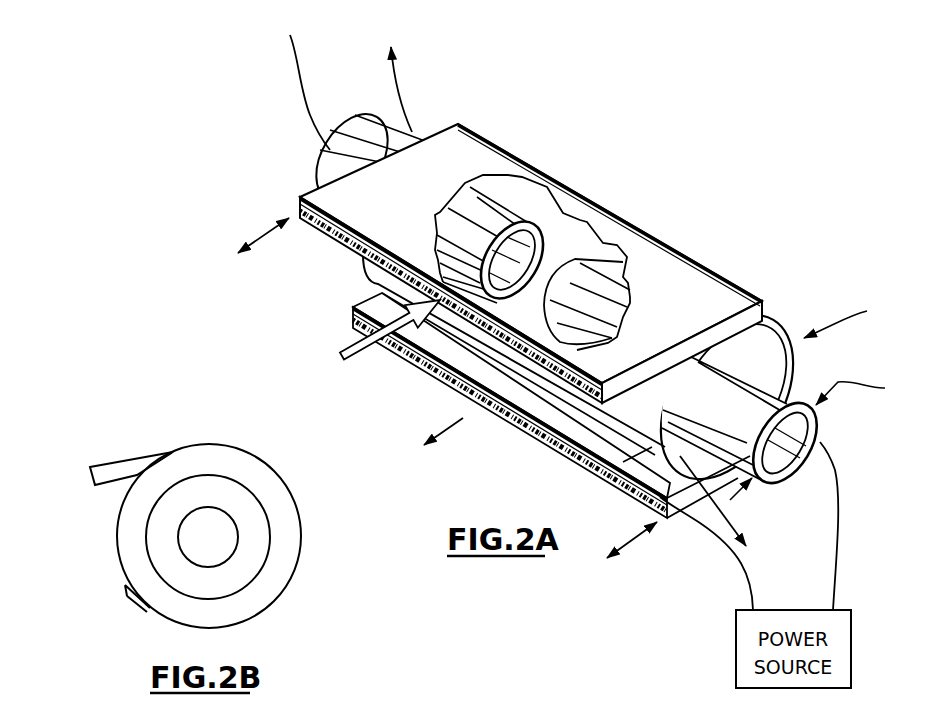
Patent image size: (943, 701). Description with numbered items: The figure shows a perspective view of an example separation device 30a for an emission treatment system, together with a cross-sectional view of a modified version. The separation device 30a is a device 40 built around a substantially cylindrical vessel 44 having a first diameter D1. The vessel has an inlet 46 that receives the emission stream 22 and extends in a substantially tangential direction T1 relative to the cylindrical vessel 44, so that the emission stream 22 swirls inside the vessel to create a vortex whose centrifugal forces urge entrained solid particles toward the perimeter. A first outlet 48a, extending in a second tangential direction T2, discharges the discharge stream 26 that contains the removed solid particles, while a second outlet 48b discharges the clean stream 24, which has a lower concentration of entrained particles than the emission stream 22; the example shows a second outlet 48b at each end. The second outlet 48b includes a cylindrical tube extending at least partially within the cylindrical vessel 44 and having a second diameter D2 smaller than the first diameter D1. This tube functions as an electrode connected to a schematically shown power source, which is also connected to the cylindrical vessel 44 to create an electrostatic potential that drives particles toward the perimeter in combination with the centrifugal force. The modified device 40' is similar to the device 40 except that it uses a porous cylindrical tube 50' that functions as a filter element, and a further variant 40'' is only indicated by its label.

In FIG. 2A, the emission stream 22 is at (342, 356).
In FIG. 2A, the clean stream 24 is at (393, 71).
In FIG. 2A, the discharge stream 26 is at (460, 416).
In FIG. 2A, the separation device 30a is at (668, 152).
In FIG. 2A, the device 40 is at (577, 143).
In FIG. 2B, the modified device 40' is at (322, 453).
In FIG. 2B, the tubular heater structure (alternate) 40'' is at (586, 685).
In FIG. 2A, the cylindrical vessel 44 is at (787, 377).
In FIG. 2B, the cylindrical vessel 44 is at (248, 620).
In FIG. 2A, the inlet 46 is at (318, 218).
In FIG. 2B, the inlet 46 is at (88, 473).
In FIG. 2A, the first outlet 48a is at (645, 502).
In FIG. 2B, the first outlet 48a is at (127, 594).
In FIG. 2A, the second outlet 48b is at (740, 347).
In FIG. 2B, the second outlet 48b is at (280, 557).
In FIG. 2B, the porous cylindrical tube 50' is at (263, 534).
In FIG. 2A, the first diameter D1 is at (852, 318).
In FIG. 2A, the second diameter D2 is at (865, 388).
In FIG. 2A, the first tangential direction T1 is at (257, 240).
In FIG. 2A, the second tangential direction T2 is at (637, 537).